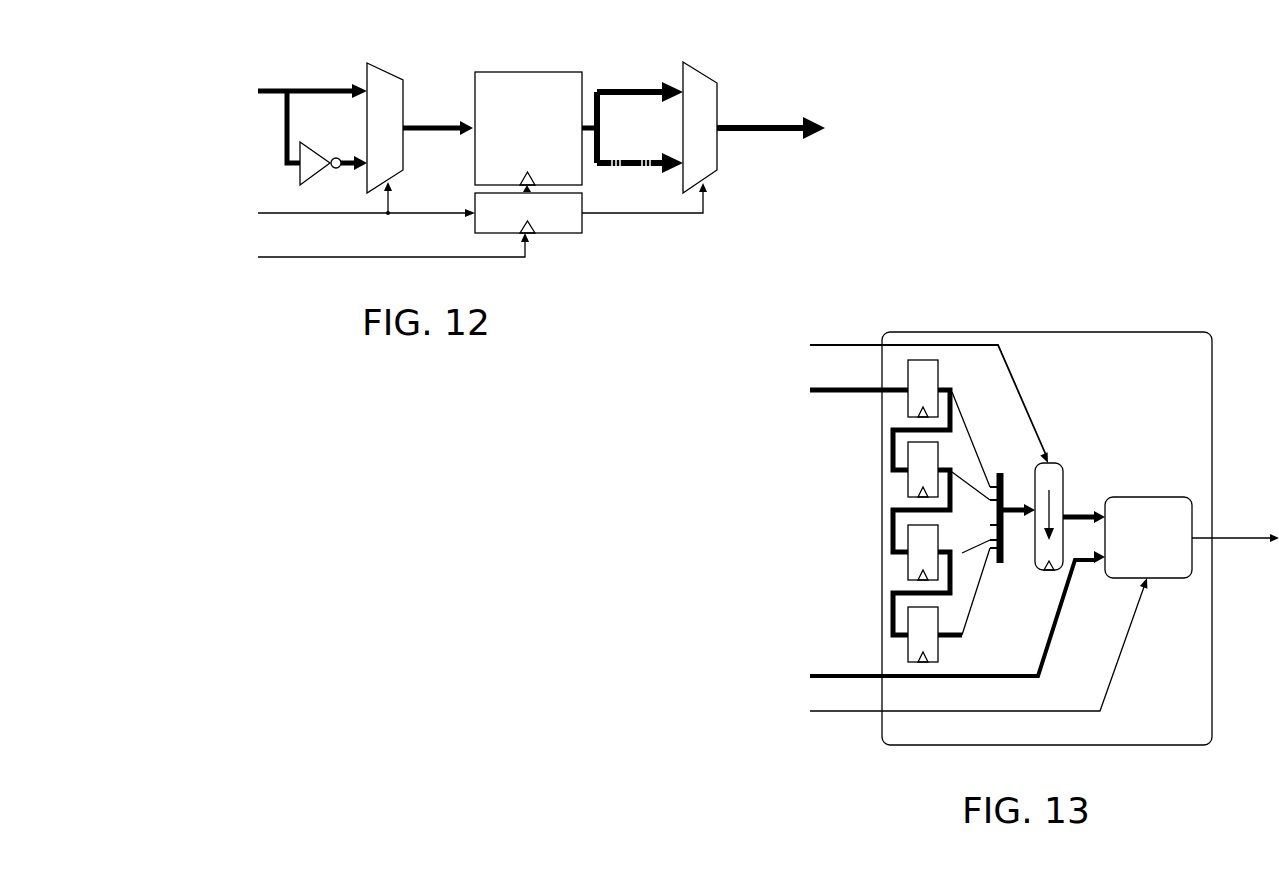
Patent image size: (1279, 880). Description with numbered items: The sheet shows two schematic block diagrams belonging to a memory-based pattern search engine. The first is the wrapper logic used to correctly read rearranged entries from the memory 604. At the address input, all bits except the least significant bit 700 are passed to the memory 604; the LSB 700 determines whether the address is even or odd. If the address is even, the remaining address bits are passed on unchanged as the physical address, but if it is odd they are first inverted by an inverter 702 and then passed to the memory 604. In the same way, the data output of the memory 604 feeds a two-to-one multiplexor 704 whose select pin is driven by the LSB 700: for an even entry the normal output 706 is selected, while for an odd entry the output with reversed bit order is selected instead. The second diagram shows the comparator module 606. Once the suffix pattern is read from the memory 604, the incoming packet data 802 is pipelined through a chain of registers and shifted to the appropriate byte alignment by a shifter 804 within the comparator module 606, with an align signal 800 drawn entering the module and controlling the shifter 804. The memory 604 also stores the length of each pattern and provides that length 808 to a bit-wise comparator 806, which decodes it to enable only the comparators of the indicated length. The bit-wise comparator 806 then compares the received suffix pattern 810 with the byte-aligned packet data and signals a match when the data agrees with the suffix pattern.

In FIG. 12, the least significant bit (LSB) 700 is at (257, 202).
In FIG. 12, the inverter 702 is at (313, 153).
In FIG. 12, the memory 604 is at (512, 70).
In FIG. 12, the normal output 706 is at (628, 155).
In FIG. 12, the 2-to-1 multiplexor 704 is at (707, 72).
In FIG. 13, the comparator module 606 is at (1172, 332).
In FIG. 13, the align signal 800 is at (832, 345).
In FIG. 13, the incoming packet data 802 is at (832, 420).
In FIG. 13, the shifter 804 is at (1127, 433).
In FIG. 13, the bit-wise comparator 806 is at (1167, 497).
In FIG. 13, the length 808 is at (1110, 677).
In FIG. 13, the suffix pattern 810 is at (1053, 650).